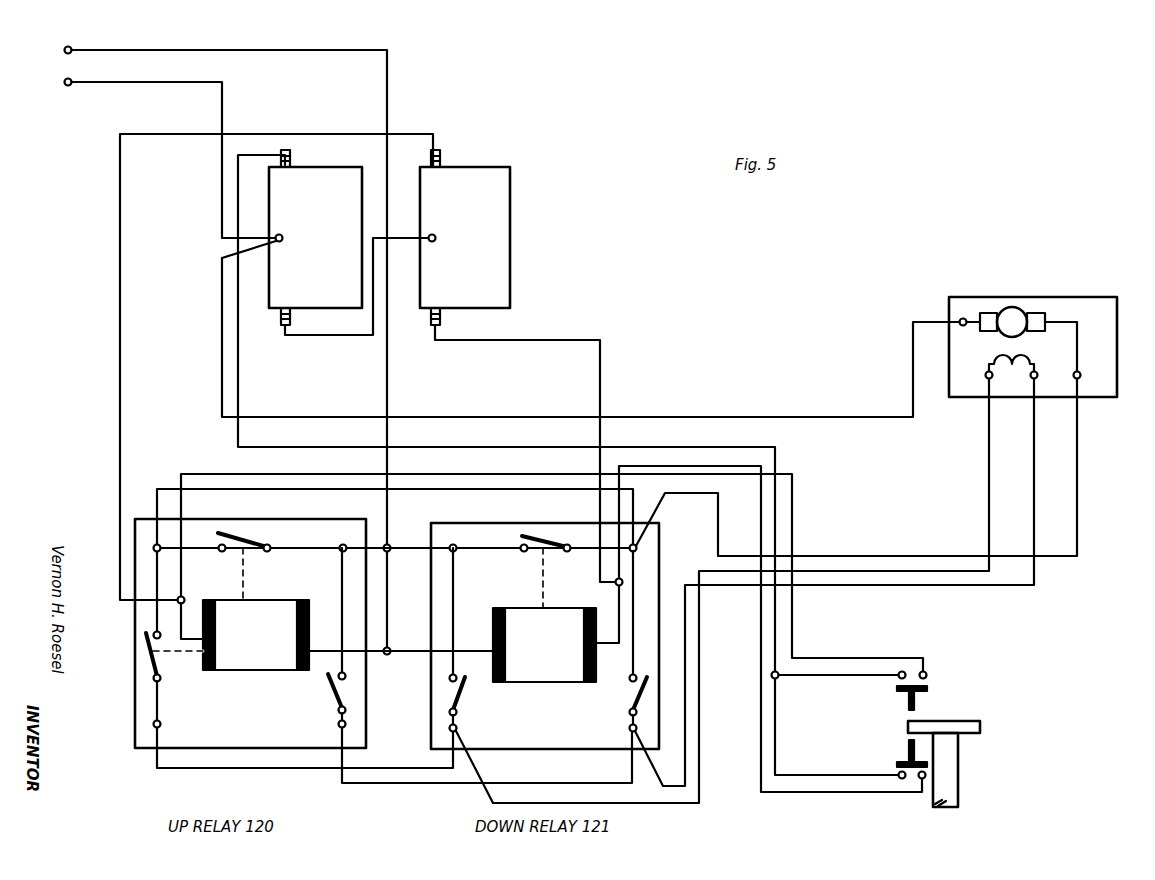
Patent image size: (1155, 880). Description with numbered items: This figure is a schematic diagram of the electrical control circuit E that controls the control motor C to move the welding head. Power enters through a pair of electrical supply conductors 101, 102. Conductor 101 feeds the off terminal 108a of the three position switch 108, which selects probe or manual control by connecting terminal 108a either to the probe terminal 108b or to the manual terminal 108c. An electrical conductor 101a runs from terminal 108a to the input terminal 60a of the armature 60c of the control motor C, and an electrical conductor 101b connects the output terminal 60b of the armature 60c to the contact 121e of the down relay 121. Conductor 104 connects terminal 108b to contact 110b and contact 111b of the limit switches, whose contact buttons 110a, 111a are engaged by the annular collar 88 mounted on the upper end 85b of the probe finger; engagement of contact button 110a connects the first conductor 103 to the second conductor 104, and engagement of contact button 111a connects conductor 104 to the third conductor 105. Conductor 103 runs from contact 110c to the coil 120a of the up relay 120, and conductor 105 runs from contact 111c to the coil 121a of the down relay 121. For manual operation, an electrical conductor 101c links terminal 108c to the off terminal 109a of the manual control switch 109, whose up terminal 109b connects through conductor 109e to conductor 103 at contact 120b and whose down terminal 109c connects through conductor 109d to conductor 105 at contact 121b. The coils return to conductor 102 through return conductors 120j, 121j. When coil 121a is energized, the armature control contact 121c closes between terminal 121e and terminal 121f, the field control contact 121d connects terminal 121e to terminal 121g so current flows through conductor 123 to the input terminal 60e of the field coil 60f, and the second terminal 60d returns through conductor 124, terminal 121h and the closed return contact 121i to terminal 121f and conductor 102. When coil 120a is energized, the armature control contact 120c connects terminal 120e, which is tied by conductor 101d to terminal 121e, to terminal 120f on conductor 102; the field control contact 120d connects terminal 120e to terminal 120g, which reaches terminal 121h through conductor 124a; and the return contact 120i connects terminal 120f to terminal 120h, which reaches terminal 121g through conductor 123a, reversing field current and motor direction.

The electrical supply conductor 101 is at (66, 86).
The electrical supply conductor 102 is at (66, 46).
The electrical conductor 101a is at (222, 301).
The electrical conductor 101b is at (895, 557).
The electrical conductor 101c is at (352, 340).
The electrical conductor 101d is at (262, 489).
The first conductor 103 is at (420, 474).
The second conductor 104 is at (238, 366).
The third conductor 105 is at (761, 520).
The three position switch 108 is at (315, 239).
The off terminal 108a is at (282, 243).
The probe terminal 108b is at (292, 162).
The manual terminal 108c is at (291, 318).
The manual control switch 109 is at (465, 239).
The off terminal 109a is at (436, 243).
The up terminal 109b is at (442, 162).
The down terminal 109c is at (442, 318).
The electrical conductor 109d is at (572, 340).
The electrical conductor 109e is at (120, 266).
The up relay 120 is at (345, 630).
The coil 120a is at (210, 672).
The electrical contact 120b is at (181, 597).
The armature control contact 120c is at (268, 555).
The field control contact 120d is at (150, 666).
The terminal 120e is at (153, 546).
The terminal 120f is at (343, 544).
The terminal 120g is at (161, 724).
The terminal 120h is at (339, 726).
The ground or return contact 120i is at (330, 688).
The return conductor 120j is at (332, 615).
The down relay 121 is at (554, 619).
The coil 121a is at (508, 682).
The electrical contact 121b is at (617, 585).
The armature control contact 121c is at (560, 540).
The field control contact 121d is at (630, 688).
The terminal 121e is at (637, 548).
The terminal 121f is at (453, 544).
The terminal 121g is at (630, 728).
The terminal 121h is at (457, 728).
The return contact 121i is at (462, 700).
The return conductor 121j is at (410, 656).
The electrical conductor 123 is at (1018, 590).
The conductor 123a is at (348, 784).
The electrical conductor 124 is at (989, 474).
The conductor 124a is at (210, 769).
The input terminal 60a is at (965, 318).
The output terminal 60b is at (1080, 378).
The armature 60c is at (1012, 307).
The second terminal 60d is at (986, 378).
The input terminal 60e is at (1037, 378).
The field coil 60f is at (1012, 372).
The contact button 110a is at (918, 706).
The contact 110b is at (900, 668).
The contact 110c is at (928, 674).
The contact button 111a is at (908, 750).
The contact 111b is at (898, 774).
The contact 111c is at (920, 780).
The annular collar 88 is at (982, 726).
The upper end of probe finger 85b is at (960, 765).
The control motor C is at (1028, 336).
The electrical control circuit E is at (656, 262).